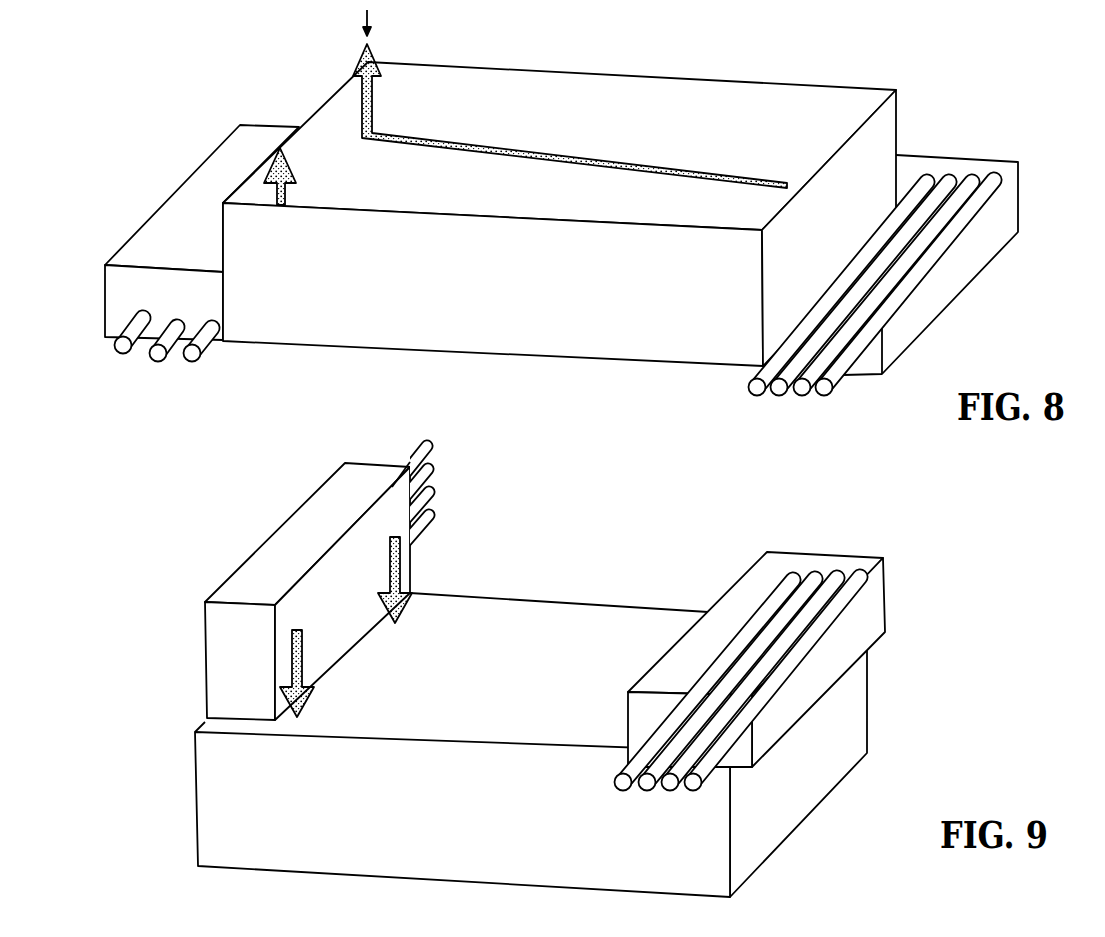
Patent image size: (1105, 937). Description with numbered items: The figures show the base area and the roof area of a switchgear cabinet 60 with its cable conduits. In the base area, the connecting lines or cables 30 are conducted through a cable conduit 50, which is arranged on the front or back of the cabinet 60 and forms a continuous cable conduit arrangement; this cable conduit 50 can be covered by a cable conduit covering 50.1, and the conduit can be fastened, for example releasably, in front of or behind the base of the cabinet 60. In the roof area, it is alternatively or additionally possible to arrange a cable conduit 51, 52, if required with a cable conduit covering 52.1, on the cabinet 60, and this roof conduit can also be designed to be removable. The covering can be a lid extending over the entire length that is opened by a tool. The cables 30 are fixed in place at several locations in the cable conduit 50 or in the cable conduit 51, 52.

In FIG. 8, the connecting lines 30 is at (183, 365).
In FIG. 9, the connecting lines 30 is at (442, 470).
In FIG. 8, the cable conduit 50 is at (191, 203).
In FIG. 8, the cable conduit covering 50.1 is at (157, 230).
In FIG. 9, the cable conduit 51 is at (800, 550).
In FIG. 9, the cable conduit 52 is at (284, 591).
In FIG. 9, the cable conduit covering 52.1 is at (247, 583).
In FIG. 9, the cabinet 60 is at (588, 595).